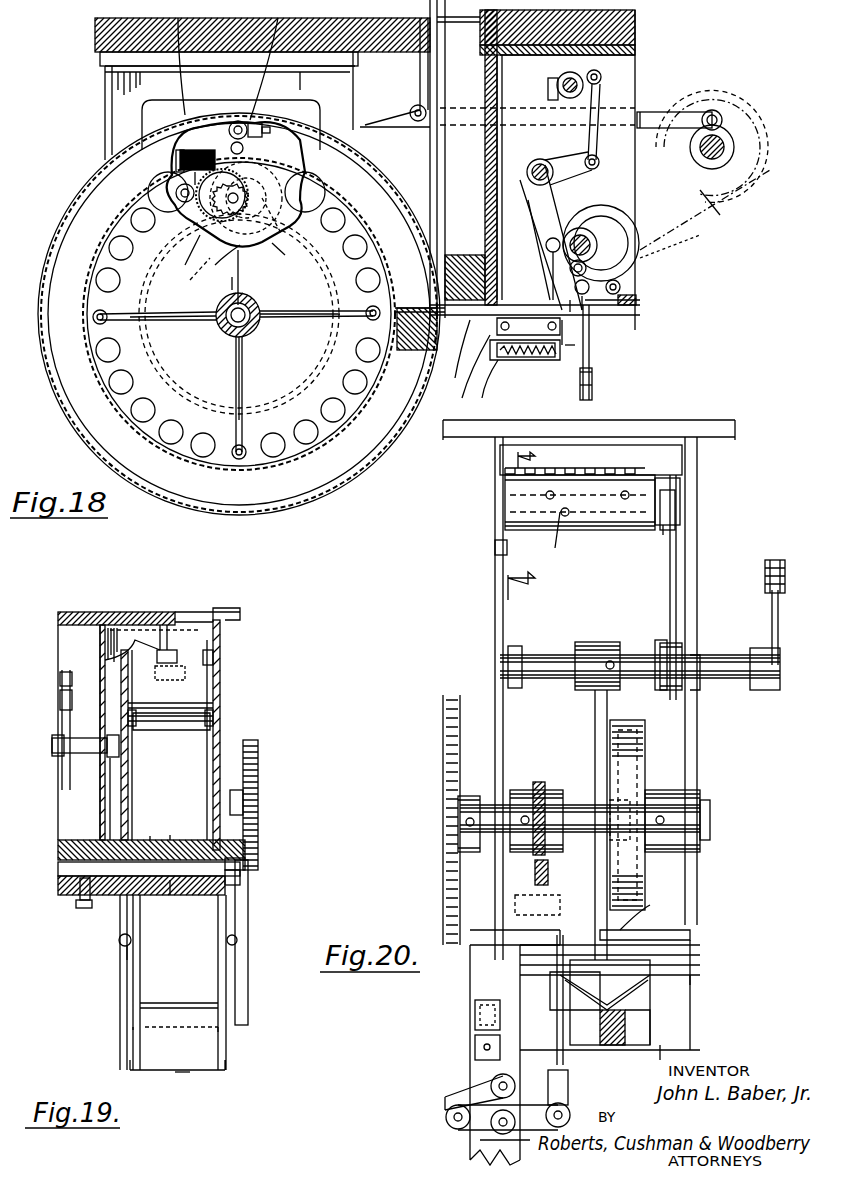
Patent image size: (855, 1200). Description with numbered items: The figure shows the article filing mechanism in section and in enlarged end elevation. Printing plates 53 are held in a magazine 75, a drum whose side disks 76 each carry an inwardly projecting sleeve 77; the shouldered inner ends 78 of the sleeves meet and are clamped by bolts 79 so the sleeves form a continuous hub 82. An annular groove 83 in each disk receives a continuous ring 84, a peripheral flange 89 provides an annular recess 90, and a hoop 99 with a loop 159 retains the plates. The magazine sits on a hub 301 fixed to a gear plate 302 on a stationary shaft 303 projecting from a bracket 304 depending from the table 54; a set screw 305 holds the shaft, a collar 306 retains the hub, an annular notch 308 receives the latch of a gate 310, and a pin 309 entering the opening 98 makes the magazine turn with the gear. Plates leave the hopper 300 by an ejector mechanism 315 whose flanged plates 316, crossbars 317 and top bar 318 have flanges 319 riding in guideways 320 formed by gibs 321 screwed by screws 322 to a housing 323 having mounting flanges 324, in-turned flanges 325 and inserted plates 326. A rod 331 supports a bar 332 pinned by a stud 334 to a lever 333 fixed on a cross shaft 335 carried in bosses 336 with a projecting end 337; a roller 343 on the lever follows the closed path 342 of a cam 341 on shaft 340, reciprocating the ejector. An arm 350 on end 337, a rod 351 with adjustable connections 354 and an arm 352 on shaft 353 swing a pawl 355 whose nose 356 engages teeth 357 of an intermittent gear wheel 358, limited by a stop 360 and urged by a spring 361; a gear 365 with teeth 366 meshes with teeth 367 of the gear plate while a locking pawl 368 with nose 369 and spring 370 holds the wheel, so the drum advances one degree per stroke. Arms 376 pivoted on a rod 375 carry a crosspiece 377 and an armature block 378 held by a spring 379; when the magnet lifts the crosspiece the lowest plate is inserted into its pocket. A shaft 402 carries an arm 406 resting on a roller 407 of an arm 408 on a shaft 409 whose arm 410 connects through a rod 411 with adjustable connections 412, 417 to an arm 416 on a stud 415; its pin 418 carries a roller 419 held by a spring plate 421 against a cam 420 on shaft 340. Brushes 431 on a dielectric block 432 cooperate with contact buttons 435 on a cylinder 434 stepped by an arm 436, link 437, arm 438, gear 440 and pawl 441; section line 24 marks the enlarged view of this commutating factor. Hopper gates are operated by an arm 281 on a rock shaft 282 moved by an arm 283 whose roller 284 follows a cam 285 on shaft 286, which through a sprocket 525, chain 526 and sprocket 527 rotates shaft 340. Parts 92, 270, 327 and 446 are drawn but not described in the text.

In FIG. 20, the section line 24 is at (519, 526).
In FIG. 18, the printing plates 53 is at (465, 255).
In FIG. 18, the table 54 is at (368, 40).
In FIG. 19, the magazine 75 is at (212, 720).
In FIG. 19, the disks 76 is at (132, 780).
In FIG. 19, the sleeve 77 is at (178, 870).
In FIG. 19, the inner ends of the sleeves 78 is at (172, 895).
In FIG. 19, the bolts 79 is at (172, 730).
In FIG. 18, the hub 82 is at (205, 330).
In FIG. 19, the hub 82 is at (181, 829).
In FIG. 19, the annular groove 83 is at (225, 1032).
In FIG. 19, the ring 84 is at (178, 695).
In FIG. 19, the flange 89 is at (100, 658).
In FIG. 19, the annular recess 90 is at (213, 658).
In FIG. 19, the frame leg 92 is at (130, 1030).
In FIG. 19, the opening 98 is at (130, 955).
In FIG. 18, the hoop 99 is at (285, 515).
In FIG. 19, the hoop 99 is at (182, 1075).
In FIG. 19, the loop 159 is at (170, 648).
In FIG. 18, the rod 270 is at (456, 20).
In FIG. 18, the arm 281 is at (418, 72).
In FIG. 18, the rock shaft 282 is at (418, 122).
In FIG. 18, the arm 283 is at (688, 112).
In FIG. 18, the roller 284 is at (714, 110).
In FIG. 18, the cam 285 is at (755, 190).
In FIG. 18, the shaft 286 is at (725, 130).
In FIG. 18, the hopper 300 is at (413, 160).
In FIG. 18, the hub 301 is at (246, 330).
In FIG. 19, the hub 301 is at (196, 842).
In FIG. 18, the gear plate 302 is at (240, 268).
In FIG. 19, the gear plate 302 is at (118, 800).
In FIG. 18, the stationary shaft 303 is at (232, 336).
In FIG. 19, the stationary shaft 303 is at (55, 880).
In FIG. 18, the bracket 304 is at (229, 106).
In FIG. 19, the bracket 304 is at (100, 608).
In FIG. 19, the set screw 305 is at (78, 910).
In FIG. 19, the collar 306 is at (240, 878).
In FIG. 19, the annular notch 308 is at (245, 860).
In FIG. 19, the pin 309 is at (132, 940).
In FIG. 19, the gate 310 is at (248, 915).
In FIG. 18, the ejector mechanism 315 is at (464, 372).
In FIG. 18, the flanged plates 316 is at (505, 362).
In FIG. 20, the flanged plates 316 is at (690, 1040).
In FIG. 18, the crossbars 317 is at (576, 350).
In FIG. 20, the crossbars 317 is at (640, 1045).
In FIG. 18, the bar 318 is at (454, 355).
In FIG. 20, the bar 318 is at (651, 912).
In FIG. 20, the flanges 319 is at (700, 963).
In FIG. 20, the guideways 320 is at (700, 978).
In FIG. 20, the gibs 321 is at (600, 990).
In FIG. 20, the screws 322 is at (470, 980).
In FIG. 18, the housing 323 is at (598, 90).
In FIG. 19, the housing 323 is at (220, 680).
In FIG. 20, the housing 323 is at (680, 505).
In FIG. 19, the flanges 324 is at (240, 615).
In FIG. 20, the flanges 324 is at (470, 445).
In FIG. 20, the in-turned flanges 325 is at (700, 942).
In FIG. 20, the plates 326 is at (700, 955).
In FIG. 19, the gear 327 is at (255, 752).
In FIG. 18, the rod 331 is at (485, 384).
In FIG. 18, the bar 332 is at (527, 358).
In FIG. 20, the bar 332 is at (630, 1000).
In FIG. 18, the lever 333 is at (540, 205).
In FIG. 20, the lever 333 is at (593, 720).
In FIG. 18, the stud 334 is at (565, 340).
In FIG. 18, the cross shaft 335 is at (530, 190).
In FIG. 20, the cross shaft 335 is at (520, 665).
In FIG. 20, the bosses 336 is at (515, 646).
In FIG. 20, the end of shaft 337 is at (780, 668).
In FIG. 18, the shaft 340 is at (615, 110).
In FIG. 20, the shaft 340 is at (490, 790).
In FIG. 18, the cam 341 is at (588, 265).
In FIG. 20, the cam 341 is at (645, 760).
In FIG. 18, the closed path 342 is at (620, 215).
In FIG. 18, the roller 343 is at (550, 255).
In FIG. 20, the roller 343 is at (608, 800).
In FIG. 18, the arm 350 is at (527, 168).
In FIG. 20, the arm 350 is at (772, 608).
In FIG. 18, the rod 351 is at (372, 125).
In FIG. 18, the arm 352 is at (232, 122).
In FIG. 19, the arm 352 is at (60, 703).
In FIG. 18, the shaft 353 is at (290, 235).
In FIG. 19, the shaft 353 is at (112, 760).
In FIG. 18, the adjustable connections 354 is at (425, 61).
In FIG. 18, the pawl 355 is at (180, 59).
In FIG. 19, the pawl 355 is at (60, 715).
In FIG. 18, the nose 356 is at (178, 160).
In FIG. 18, the teeth 357 is at (195, 180).
In FIG. 18, the intermittent gear wheel 358 is at (248, 198).
In FIG. 19, the intermittent gear wheel 358 is at (105, 750).
In FIG. 18, the adjustable stop 360 is at (175, 150).
In FIG. 18, the spring 361 is at (250, 175).
In FIG. 18, the gear 365 is at (221, 260).
In FIG. 19, the gear 365 is at (118, 765).
In FIG. 18, the teeth 366 is at (222, 280).
In FIG. 18, the teeth 367 is at (285, 259).
In FIG. 18, the locking pawl 368 is at (183, 250).
In FIG. 18, the nose 369 is at (188, 275).
In FIG. 18, the spring 370 is at (183, 205).
In FIG. 20, the rod 375 is at (690, 920).
In FIG. 18, the arms 376 is at (530, 310).
In FIG. 20, the arms 376 is at (650, 1020).
In FIG. 20, the crosspiece 377 is at (575, 945).
In FIG. 18, the block 378 is at (592, 378).
In FIG. 20, the block 378 is at (612, 1045).
In FIG. 18, the spring 379 is at (570, 348).
In FIG. 20, the shaft 402 is at (492, 1082).
In FIG. 20, the arm 406 is at (445, 1103).
In FIG. 20, the roller 407 is at (450, 1125).
In FIG. 20, the arm 408 is at (497, 1130).
In FIG. 20, the shaft 409 is at (545, 1128).
In FIG. 18, the arm 410 is at (592, 395).
In FIG. 20, the arm 410 is at (520, 1142).
In FIG. 18, the rod 411 is at (580, 350).
In FIG. 20, the rod 411 is at (565, 1060).
In FIG. 18, the adjustable connection 412 is at (592, 388).
In FIG. 20, the adjustable connection 412 is at (568, 1090).
In FIG. 18, the stud 415 is at (610, 302).
In FIG. 18, the arm 416 is at (632, 305).
In FIG. 18, the adjustable connections 417 is at (588, 305).
In FIG. 18, the pin 418 is at (620, 290).
In FIG. 20, the pin 418 is at (548, 870).
In FIG. 18, the roller 419 is at (590, 283).
In FIG. 20, the roller 419 is at (515, 885).
In FIG. 18, the cam 420 is at (598, 240).
In FIG. 20, the cam 420 is at (533, 790).
In FIG. 18, the spring plate 421 is at (570, 310).
In FIG. 20, the brushes 431 is at (630, 428).
In FIG. 20, the block 432 is at (660, 455).
In FIG. 20, the cylinder 434 is at (615, 530).
In FIG. 20, the contact buttons 435 is at (568, 538).
In FIG. 18, the arm 436 is at (570, 160).
In FIG. 20, the arm 436 is at (655, 670).
In FIG. 18, the link 437 is at (610, 65).
In FIG. 20, the link 437 is at (678, 605).
In FIG. 20, the arm 438 is at (675, 490).
In FIG. 20, the gear 440 is at (680, 475).
In FIG. 20, the pawl 441 is at (670, 527).
In FIG. 20, the bracket 446 is at (495, 548).
In FIG. 18, the sprocket 525 is at (720, 200).
In FIG. 18, the chain 526 is at (712, 218).
In FIG. 18, the sprocket 527 is at (670, 250).
In FIG. 20, the sprocket 527 is at (440, 740).